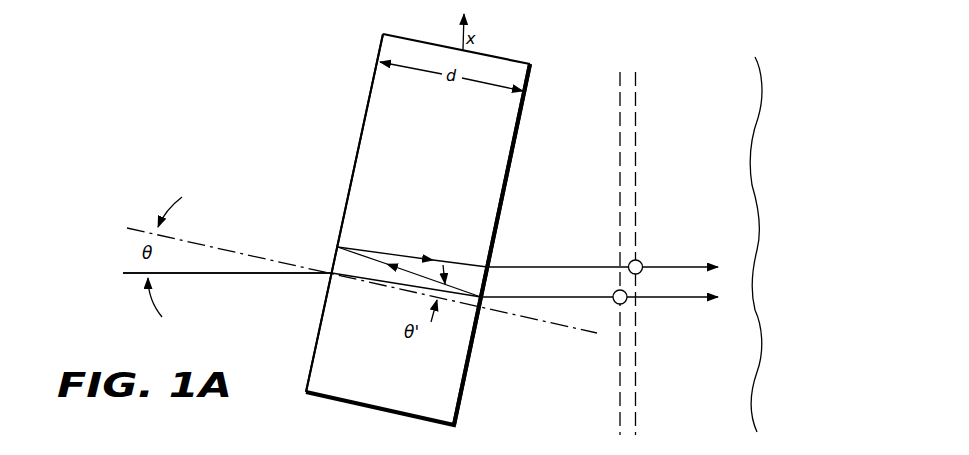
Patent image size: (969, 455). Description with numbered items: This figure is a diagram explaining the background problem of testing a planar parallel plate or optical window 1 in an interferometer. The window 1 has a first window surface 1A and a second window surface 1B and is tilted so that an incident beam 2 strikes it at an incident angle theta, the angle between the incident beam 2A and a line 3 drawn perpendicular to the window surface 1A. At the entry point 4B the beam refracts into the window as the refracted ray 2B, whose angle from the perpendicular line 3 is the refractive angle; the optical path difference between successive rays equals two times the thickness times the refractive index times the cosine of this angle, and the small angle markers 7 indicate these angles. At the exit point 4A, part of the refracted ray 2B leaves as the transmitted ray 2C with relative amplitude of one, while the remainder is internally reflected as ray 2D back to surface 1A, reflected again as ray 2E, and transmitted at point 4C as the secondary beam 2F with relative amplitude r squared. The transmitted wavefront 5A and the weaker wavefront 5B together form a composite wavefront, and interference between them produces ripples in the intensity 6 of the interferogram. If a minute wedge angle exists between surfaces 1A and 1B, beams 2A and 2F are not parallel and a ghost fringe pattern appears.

The optical window 1 is at (366, 76).
The window surface 1A is at (364, 117).
The window surface 1B is at (517, 128).
The incident beam 2 is at (220, 284).
The incident beam 2A is at (247, 276).
The refracted ray 2B is at (418, 289).
The transmitted ray 2C is at (580, 297).
The internally reflected ray 2D is at (420, 258).
The internally reflected ray 2E is at (422, 251).
The secondary beam 2F is at (580, 265).
The perpendicular line 3 is at (244, 253).
The exit point of first beam 4A is at (484, 297).
The entry point of incident beam 4B is at (342, 243).
The exit point of second beam 4C is at (488, 266).
The transmitted wavefront 5A is at (619, 103).
The wavefront 5B is at (657, 107).
The intensity 6 is at (760, 120).
The angle indicator 7 is at (446, 268).